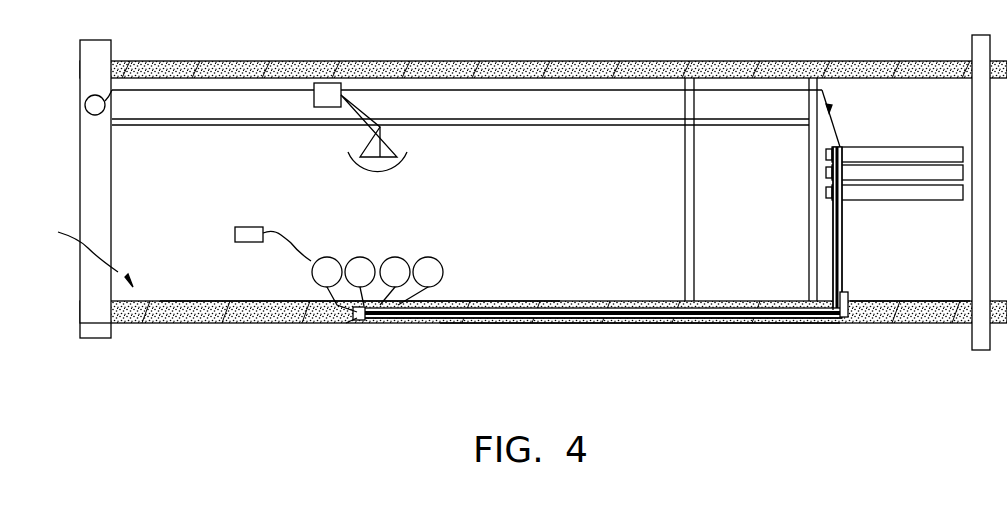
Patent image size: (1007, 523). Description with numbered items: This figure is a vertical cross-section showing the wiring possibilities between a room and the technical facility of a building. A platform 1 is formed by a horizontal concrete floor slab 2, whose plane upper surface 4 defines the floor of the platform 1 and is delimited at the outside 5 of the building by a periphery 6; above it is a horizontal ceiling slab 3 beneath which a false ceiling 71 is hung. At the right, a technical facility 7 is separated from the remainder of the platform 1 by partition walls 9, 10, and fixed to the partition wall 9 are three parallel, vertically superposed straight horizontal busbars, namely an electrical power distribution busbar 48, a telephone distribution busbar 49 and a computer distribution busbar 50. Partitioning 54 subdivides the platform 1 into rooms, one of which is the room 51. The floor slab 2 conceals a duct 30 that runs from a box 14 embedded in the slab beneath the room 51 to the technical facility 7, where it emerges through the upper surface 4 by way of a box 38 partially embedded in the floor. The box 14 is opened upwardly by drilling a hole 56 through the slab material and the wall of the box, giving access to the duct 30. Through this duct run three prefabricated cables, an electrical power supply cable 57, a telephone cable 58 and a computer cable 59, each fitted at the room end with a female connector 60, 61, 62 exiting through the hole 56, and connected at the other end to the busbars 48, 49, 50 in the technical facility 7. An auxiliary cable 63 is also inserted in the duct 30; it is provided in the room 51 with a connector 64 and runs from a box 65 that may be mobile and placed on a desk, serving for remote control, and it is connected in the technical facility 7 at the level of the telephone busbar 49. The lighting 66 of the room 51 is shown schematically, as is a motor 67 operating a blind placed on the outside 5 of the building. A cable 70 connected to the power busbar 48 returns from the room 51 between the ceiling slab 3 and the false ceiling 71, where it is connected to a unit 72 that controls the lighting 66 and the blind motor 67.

The platform 1 is at (101, 249).
The floor slab 2 is at (232, 323).
The ceiling slab 3 is at (482, 60).
The upper surface 4 is at (200, 301).
The outside 5 is at (80, 182).
The periphery 6 is at (80, 310).
The technical facility 7 is at (890, 292).
The partition wall 9 is at (892, 62).
The partition wall 10 is at (809, 235).
The box 14 is at (361, 320).
The duct 30 is at (556, 323).
The box 38 is at (844, 317).
The electrical power distribution busbar 48 is at (859, 150).
The telephone distribution busbar 49 is at (905, 172).
The computer distribution busbar 50 is at (905, 192).
The room 51 is at (170, 221).
The partitioning 54 is at (690, 323).
The hole 56 is at (356, 318).
The electrical power supply cable 57 is at (832, 262).
The telephone cable 58 is at (842, 232).
The computer cable 59 is at (842, 264).
The female connector 60 is at (362, 256).
The female connector 61 is at (397, 258).
The female connector 62 is at (430, 264).
The auxiliary cable 63 is at (842, 248).
The connector 64 is at (325, 257).
The box 65 is at (247, 227).
The lighting 66 is at (398, 150).
The motor 67 is at (85, 103).
The cable 70 is at (733, 90).
The false ceiling 71 is at (592, 128).
The unit 72 is at (326, 83).